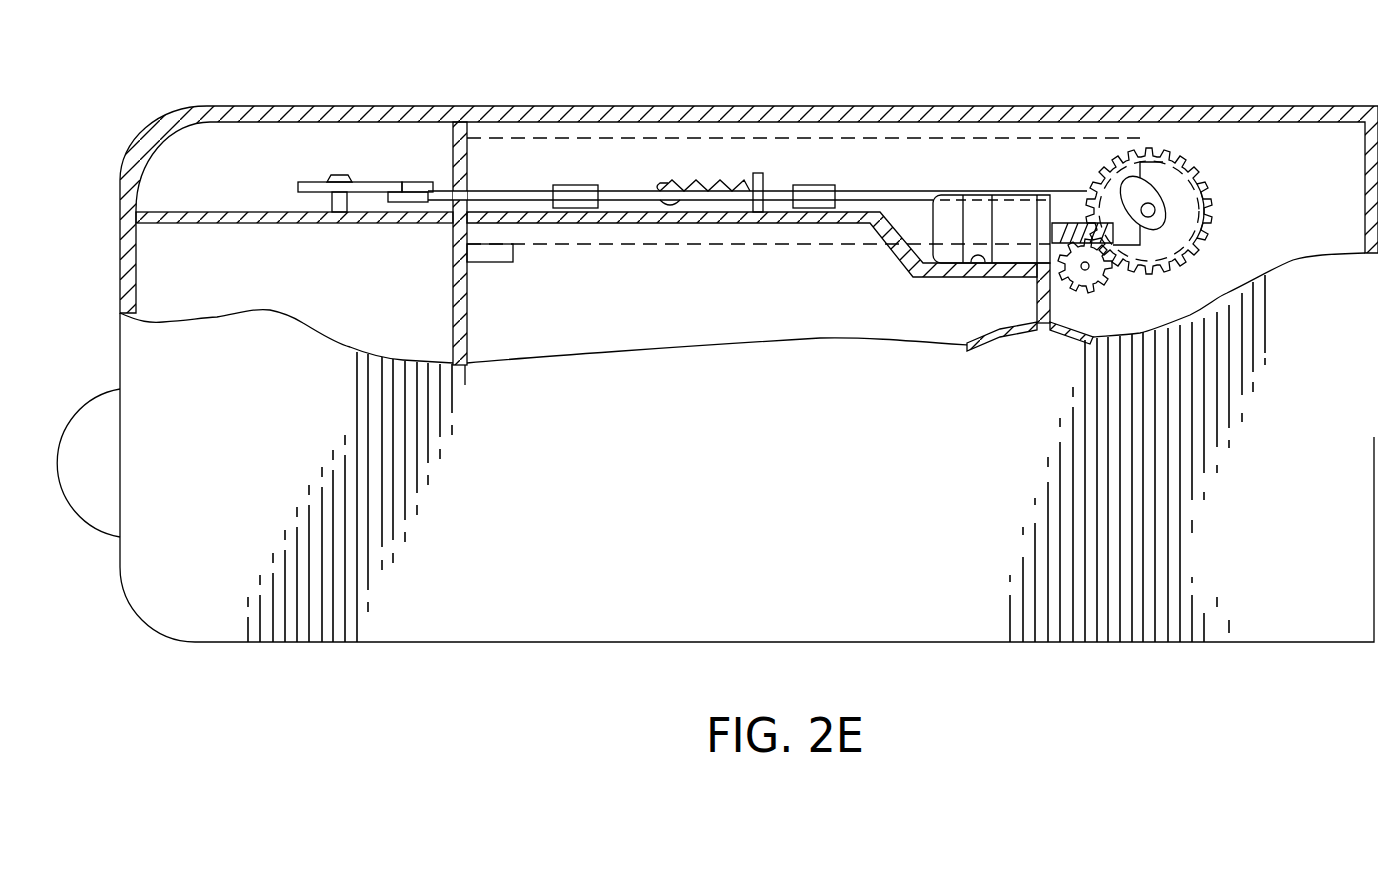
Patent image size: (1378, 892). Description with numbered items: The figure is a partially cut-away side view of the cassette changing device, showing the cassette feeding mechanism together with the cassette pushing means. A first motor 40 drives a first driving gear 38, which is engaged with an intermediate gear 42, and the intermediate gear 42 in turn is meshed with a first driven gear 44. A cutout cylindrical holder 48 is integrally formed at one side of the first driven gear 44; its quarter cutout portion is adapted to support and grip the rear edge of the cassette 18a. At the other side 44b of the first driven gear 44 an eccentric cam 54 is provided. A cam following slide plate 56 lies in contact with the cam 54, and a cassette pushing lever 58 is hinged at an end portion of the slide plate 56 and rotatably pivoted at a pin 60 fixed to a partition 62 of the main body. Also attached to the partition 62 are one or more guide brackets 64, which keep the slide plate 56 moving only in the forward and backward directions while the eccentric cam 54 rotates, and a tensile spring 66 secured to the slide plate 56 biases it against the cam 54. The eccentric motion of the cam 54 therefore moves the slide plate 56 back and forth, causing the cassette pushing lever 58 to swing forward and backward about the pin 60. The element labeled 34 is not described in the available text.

The partition 62 is at (237, 212).
The pin 60 is at (338, 176).
The cassette pushing lever 58 is at (388, 191).
The guide bracket 64 is at (577, 190).
The tensile spring 66 is at (710, 190).
The cam following slide plate 56 is at (887, 197).
The first driven gear 44 is at (1114, 152).
The eccentric cam 54 is at (1183, 180).
The cutout cylindrical holder 48 is at (1157, 187).
The other side of the first driven gear 44b is at (1213, 212).
The intermediate gear 42 is at (1087, 283).
The stop block 34 is at (497, 258).
The cassette 18a is at (707, 244).
The first motor 40 is at (946, 260).
The first driving gear 38 is at (1040, 323).